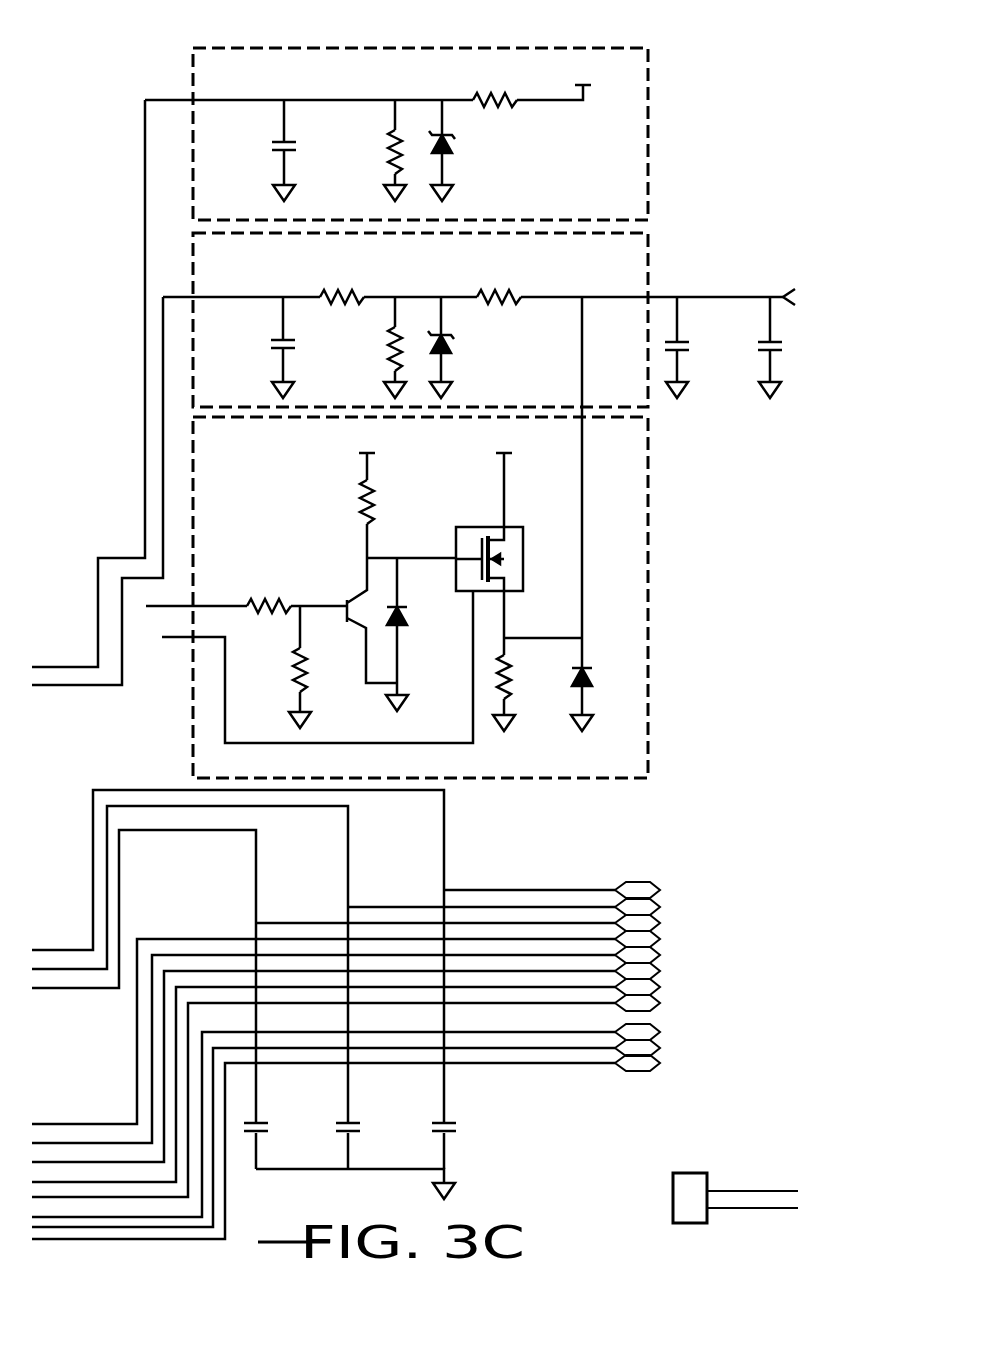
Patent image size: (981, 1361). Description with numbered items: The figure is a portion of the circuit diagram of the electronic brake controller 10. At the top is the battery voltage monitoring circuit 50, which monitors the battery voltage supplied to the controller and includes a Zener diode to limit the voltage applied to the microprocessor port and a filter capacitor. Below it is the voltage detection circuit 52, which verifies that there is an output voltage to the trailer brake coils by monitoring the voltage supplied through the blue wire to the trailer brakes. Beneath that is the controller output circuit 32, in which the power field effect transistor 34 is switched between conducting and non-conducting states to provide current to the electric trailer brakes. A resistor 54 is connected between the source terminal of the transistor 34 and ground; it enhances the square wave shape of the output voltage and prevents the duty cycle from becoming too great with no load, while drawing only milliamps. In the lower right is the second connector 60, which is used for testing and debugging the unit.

The brake controller 10 is at (677, 125).
The battery voltage monitoring circuit 50 is at (396, 134).
The voltage detection circuit 52 is at (497, 320).
The controller output circuit 32 is at (397, 597).
The power Field Effect Transistor 34 is at (508, 520).
The resistor 54 is at (516, 702).
The second connector 60 is at (750, 1172).